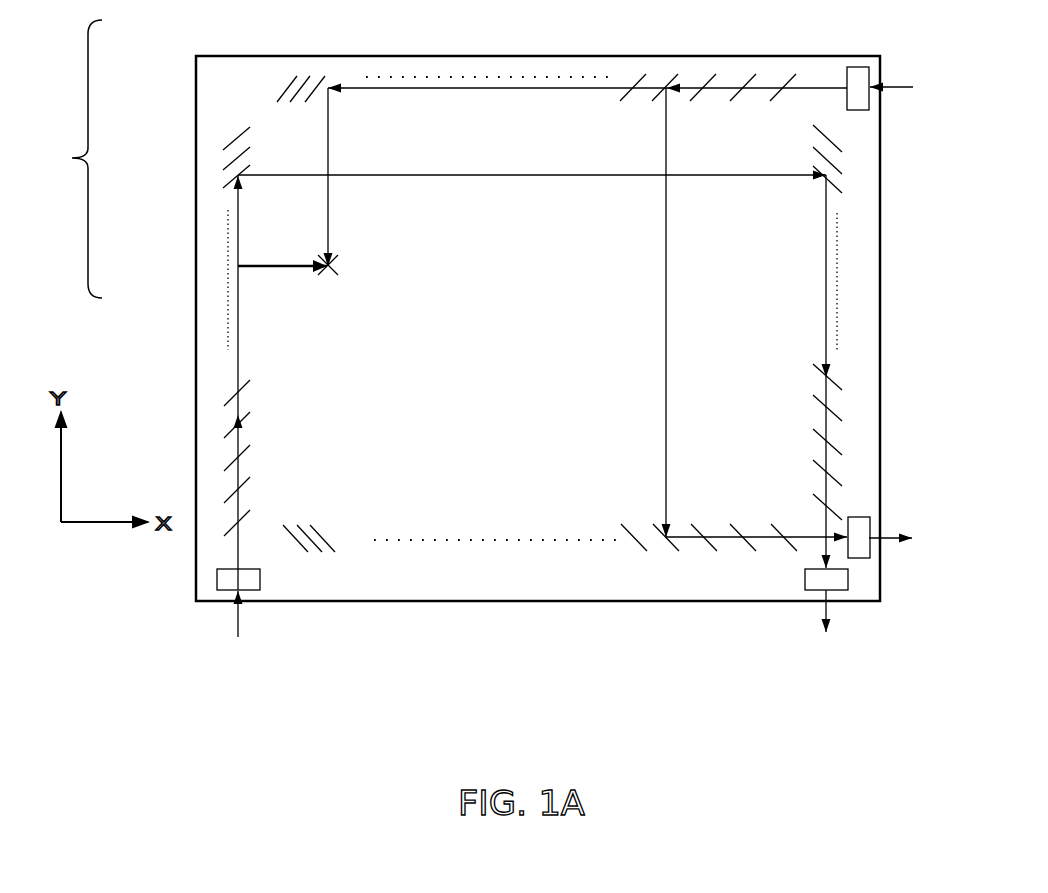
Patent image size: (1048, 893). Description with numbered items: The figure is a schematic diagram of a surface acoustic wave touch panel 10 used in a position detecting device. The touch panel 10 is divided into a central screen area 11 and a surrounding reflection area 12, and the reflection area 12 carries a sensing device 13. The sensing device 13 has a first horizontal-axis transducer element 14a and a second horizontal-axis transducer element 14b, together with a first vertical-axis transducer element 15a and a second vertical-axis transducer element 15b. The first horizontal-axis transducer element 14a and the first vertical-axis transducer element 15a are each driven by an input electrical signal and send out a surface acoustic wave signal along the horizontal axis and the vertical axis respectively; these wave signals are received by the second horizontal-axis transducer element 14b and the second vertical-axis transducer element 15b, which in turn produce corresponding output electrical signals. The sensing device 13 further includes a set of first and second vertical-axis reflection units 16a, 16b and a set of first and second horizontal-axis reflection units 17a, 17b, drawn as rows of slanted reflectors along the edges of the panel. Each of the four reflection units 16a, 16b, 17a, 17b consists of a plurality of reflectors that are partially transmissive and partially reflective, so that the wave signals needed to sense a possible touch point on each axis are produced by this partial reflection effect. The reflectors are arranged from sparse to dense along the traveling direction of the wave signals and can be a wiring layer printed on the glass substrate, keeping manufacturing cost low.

The touch panel 10 is at (520, 15).
The screen area 11 is at (425, 512).
The reflection area 12 is at (858, 323).
The sensing device 13 is at (91, 164).
The first horizontal-axis transducer element 14a is at (258, 580).
The second horizontal-axis transducer element 14b is at (805, 579).
The first vertical-axis transducer element 15a is at (839, 87).
The second vertical-axis transducer element 15b is at (856, 527).
The first vertical-axis reflection unit 16a is at (256, 331).
The second vertical-axis reflection unit 16b is at (809, 322).
The first horizontal-axis reflection unit 17a is at (536, 99).
The second horizontal-axis reflection unit 17b is at (540, 526).